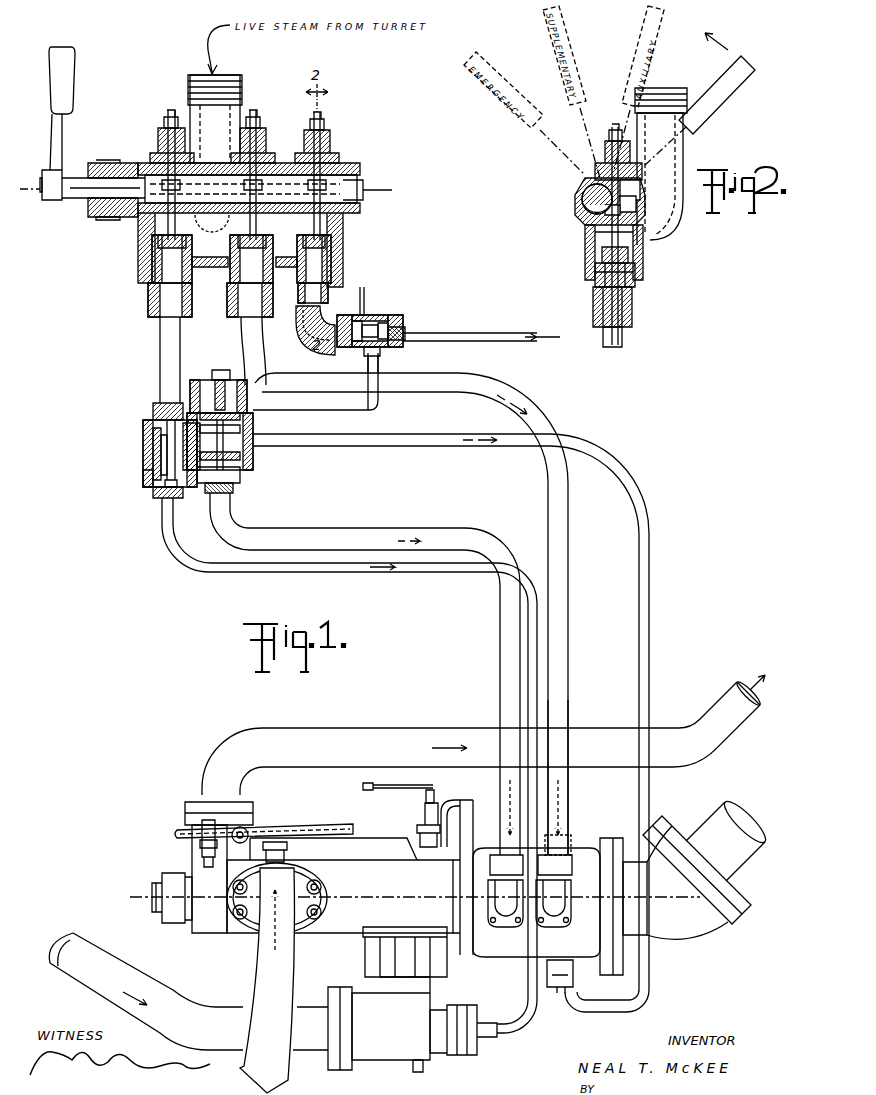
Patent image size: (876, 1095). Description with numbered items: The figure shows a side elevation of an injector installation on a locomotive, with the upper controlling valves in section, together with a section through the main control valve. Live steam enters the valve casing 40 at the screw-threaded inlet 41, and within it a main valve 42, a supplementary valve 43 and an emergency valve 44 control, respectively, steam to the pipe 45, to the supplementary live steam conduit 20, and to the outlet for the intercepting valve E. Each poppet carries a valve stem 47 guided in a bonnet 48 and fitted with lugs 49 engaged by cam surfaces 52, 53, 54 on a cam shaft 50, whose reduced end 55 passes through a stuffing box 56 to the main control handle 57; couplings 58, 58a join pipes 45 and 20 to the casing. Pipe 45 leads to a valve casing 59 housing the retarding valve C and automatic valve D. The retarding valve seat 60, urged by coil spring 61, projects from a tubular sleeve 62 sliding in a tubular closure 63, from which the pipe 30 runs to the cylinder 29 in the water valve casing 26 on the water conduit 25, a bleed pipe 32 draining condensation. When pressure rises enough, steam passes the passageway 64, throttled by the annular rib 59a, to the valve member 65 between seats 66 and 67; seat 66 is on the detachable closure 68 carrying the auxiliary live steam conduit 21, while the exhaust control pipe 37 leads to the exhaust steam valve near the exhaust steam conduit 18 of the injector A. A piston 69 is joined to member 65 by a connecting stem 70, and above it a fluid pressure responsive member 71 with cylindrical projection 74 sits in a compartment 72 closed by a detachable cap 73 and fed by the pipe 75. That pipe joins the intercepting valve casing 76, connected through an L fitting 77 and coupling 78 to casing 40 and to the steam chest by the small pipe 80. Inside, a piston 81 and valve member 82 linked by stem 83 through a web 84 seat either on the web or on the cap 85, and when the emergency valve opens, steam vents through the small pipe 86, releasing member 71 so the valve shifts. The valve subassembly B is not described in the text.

In FIG. 1, the exhaust steam conduit 18 is at (621, 895).
In FIG. 1, the supplementary live steam conduit 20 is at (568, 675).
In FIG. 1, the auxiliary live steam conduit 21 is at (333, 530).
In FIG. 1, the water conduit 25 is at (188, 991).
In FIG. 1, the water valve casing 26 is at (378, 996).
In FIG. 1, the cylinder 29 is at (440, 1040).
In FIG. 1, the water control pipe 30 is at (216, 572).
In FIG. 1, the bleed pipe 32 is at (416, 1070).
In FIG. 1, the exhaust control pipe 37 is at (387, 438).
In FIG. 1, the valve casing 40 is at (213, 268).
In FIG. 2, the valve casing 40 is at (645, 232).
In FIG. 1, the screw-threaded inlet 41 is at (228, 94).
In FIG. 2, the screw-threaded inlet 41 is at (660, 96).
In FIG. 1, the main valve 42 is at (153, 246).
In FIG. 1, the supplementary valve 43 is at (268, 244).
In FIG. 1, the emergency valve 44 is at (332, 247).
In FIG. 2, the emergency valve 44 is at (628, 256).
In FIG. 1, the pipe 45 is at (166, 353).
In FIG. 1, the valve stem 47 is at (176, 224).
In FIG. 2, the valve stem 47 is at (612, 240).
In FIG. 1, the bonnet 48 is at (164, 130).
In FIG. 2, the bonnet 48 is at (605, 150).
In FIG. 1, the laterally projecting lugs 49 is at (193, 163).
In FIG. 2, the laterally projecting lugs 49 is at (633, 182).
In FIG. 1, the cam shaft 50 is at (206, 189).
In FIG. 2, the cam shaft 50 is at (578, 190).
In FIG. 2, the cam surface 52 is at (645, 196).
In FIG. 2, the cam surface 53 is at (625, 208).
In FIG. 2, the cam surface 54 is at (583, 215).
In FIG. 1, the reduced end 55 is at (96, 182).
In FIG. 1, the stuffing box 56 is at (104, 214).
In FIG. 1, the main control handle 57 is at (66, 103).
In FIG. 2, the main control handle 57 is at (716, 100).
In FIG. 1, the coupling 58 is at (148, 306).
In FIG. 1, the coupling 58a is at (274, 310).
In FIG. 1, the valve casing 59 is at (148, 425).
In FIG. 1, the annular rib 59a is at (160, 410).
In FIG. 1, the valve seat 60 is at (152, 433).
In FIG. 1, the coil spring 61 is at (160, 455).
In FIG. 1, the tubular sleeve 62 is at (148, 472).
In FIG. 1, the tubular closure 63 is at (155, 492).
In FIG. 1, the passageway 64 is at (184, 482).
In FIG. 1, the valve member 65 is at (245, 470).
In FIG. 1, the valve seat 66 is at (238, 484).
In FIG. 1, the valve seat 67 is at (252, 452).
In FIG. 1, the detachable closure 68 is at (233, 495).
In FIG. 1, the piston 69 is at (250, 413).
In FIG. 1, the connecting stem 70 is at (250, 428).
In FIG. 1, the fluid pressure responsive member 71 is at (243, 398).
In FIG. 1, the compartment 72 is at (200, 396).
In FIG. 1, the detachable cap 73 is at (220, 380).
In FIG. 1, the cylindrical projection 74 is at (255, 374).
In FIG. 1, the pipe 75 is at (375, 403).
In FIG. 1, the intercepting valve casing 76 is at (392, 348).
In FIG. 1, the L fitting 77 is at (300, 330).
In FIG. 2, the L fitting 77 is at (633, 312).
In FIG. 1, the coupling 78 is at (329, 284).
In FIG. 2, the coupling 78 is at (636, 284).
In FIG. 1, the small pipe 80 is at (478, 342).
In FIG. 1, the piston 81 is at (350, 322).
In FIG. 1, the valve member 82 is at (385, 318).
In FIG. 1, the stem 83 is at (368, 322).
In FIG. 1, the web 84 is at (364, 350).
In FIG. 1, the cap 85 is at (405, 330).
In FIG. 1, the small pipe 86 is at (363, 290).
In FIG. 1, the exhaust steam injector A is at (447, 815).
In FIG. 1, the valve assembly B is at (345, 255).
In FIG. 1, the retarding valve C is at (150, 453).
In FIG. 1, the automatic valve D is at (262, 466).
In FIG. 1, the intercepting valve E is at (398, 316).